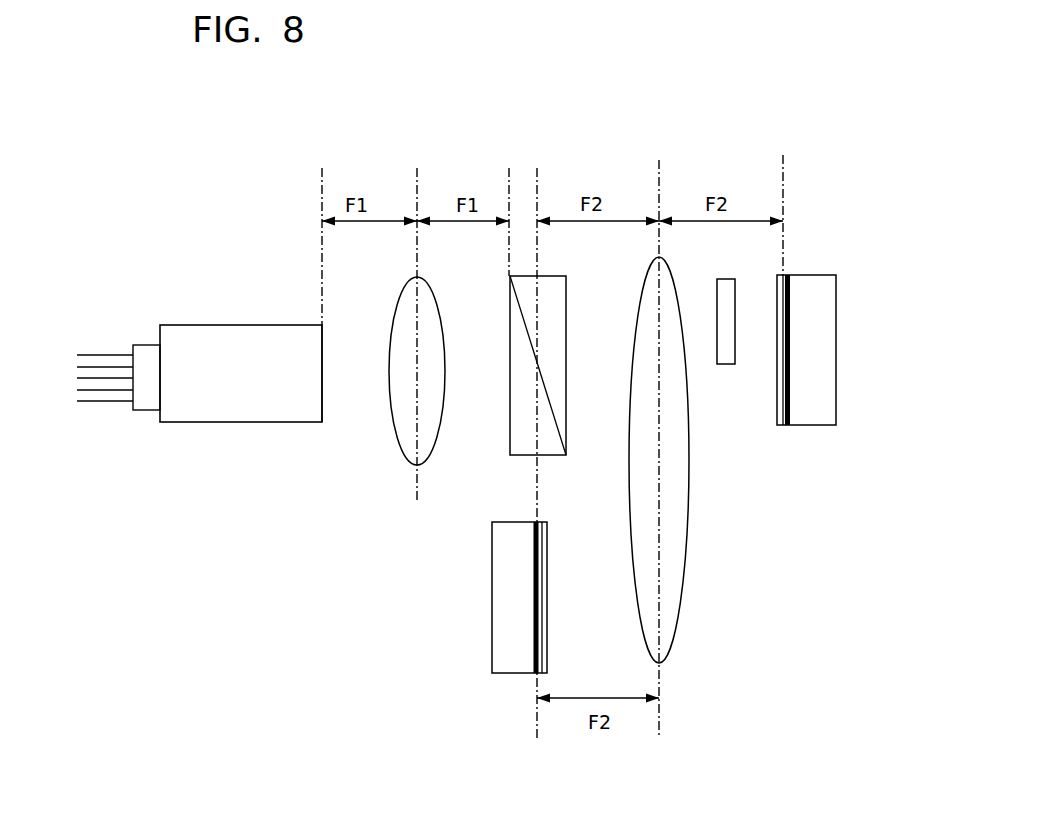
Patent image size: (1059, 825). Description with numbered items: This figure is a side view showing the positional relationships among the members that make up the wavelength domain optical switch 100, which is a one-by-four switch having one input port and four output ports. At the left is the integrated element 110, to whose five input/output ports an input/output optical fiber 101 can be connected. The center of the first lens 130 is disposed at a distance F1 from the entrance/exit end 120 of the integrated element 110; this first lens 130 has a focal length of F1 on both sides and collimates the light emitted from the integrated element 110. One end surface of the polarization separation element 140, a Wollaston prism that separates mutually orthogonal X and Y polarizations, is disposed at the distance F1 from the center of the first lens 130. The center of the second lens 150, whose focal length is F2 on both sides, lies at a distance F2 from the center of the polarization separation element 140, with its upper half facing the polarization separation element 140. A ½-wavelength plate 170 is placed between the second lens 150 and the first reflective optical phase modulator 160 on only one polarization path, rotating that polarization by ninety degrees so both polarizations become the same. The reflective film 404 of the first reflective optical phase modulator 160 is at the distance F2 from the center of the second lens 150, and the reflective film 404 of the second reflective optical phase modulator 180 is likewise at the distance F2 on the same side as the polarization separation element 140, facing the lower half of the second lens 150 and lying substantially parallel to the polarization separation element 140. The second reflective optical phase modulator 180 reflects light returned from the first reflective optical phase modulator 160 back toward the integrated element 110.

The wavelength domain optical switch 100 is at (136, 226).
The input/output optical fiber 101 is at (98, 402).
The integrated element 110 is at (193, 325).
The entrance/exit end 120 is at (323, 365).
The first lens 130 is at (404, 458).
The polarization separation element 140 is at (510, 437).
The second lens 150 is at (682, 612).
The first reflective optical phase modulator 160 is at (828, 274).
The ½-wavelength plate 170 is at (723, 364).
The second reflective optical phase modulator 180 is at (520, 671).
The reflective film 404 is at (538, 624).